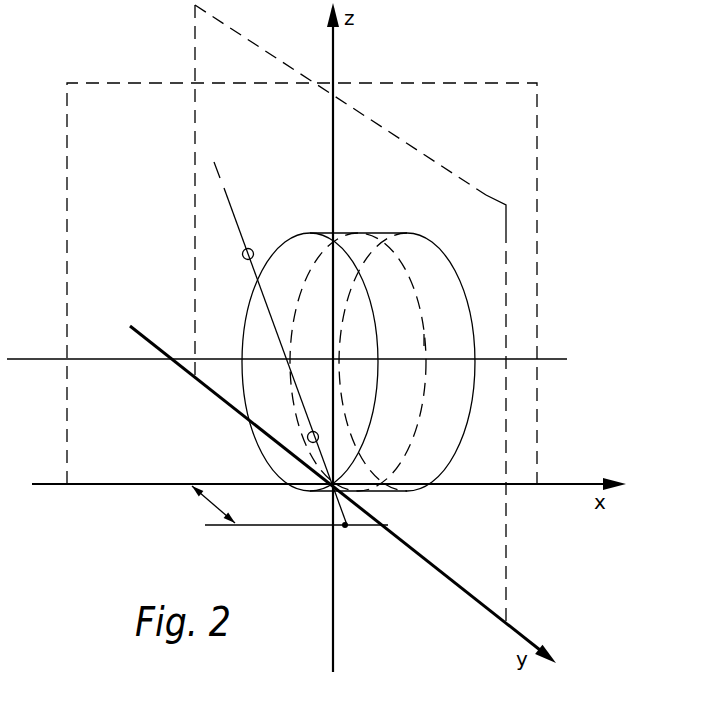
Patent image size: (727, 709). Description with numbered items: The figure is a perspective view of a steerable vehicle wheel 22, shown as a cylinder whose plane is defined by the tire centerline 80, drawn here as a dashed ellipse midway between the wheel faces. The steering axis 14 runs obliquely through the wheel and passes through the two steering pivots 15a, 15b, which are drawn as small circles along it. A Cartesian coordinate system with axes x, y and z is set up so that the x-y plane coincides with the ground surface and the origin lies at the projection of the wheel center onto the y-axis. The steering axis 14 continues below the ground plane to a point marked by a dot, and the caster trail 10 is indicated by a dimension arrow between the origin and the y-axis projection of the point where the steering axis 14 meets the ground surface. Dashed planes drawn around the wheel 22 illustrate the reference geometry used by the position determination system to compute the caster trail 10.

The caster trail 10 is at (205, 506).
The steering axis 14 is at (228, 194).
The steering pivot 15a is at (253, 250).
The steering pivot 15b is at (307, 441).
The wheel 22 is at (430, 246).
The tire centerline 80 is at (424, 339).